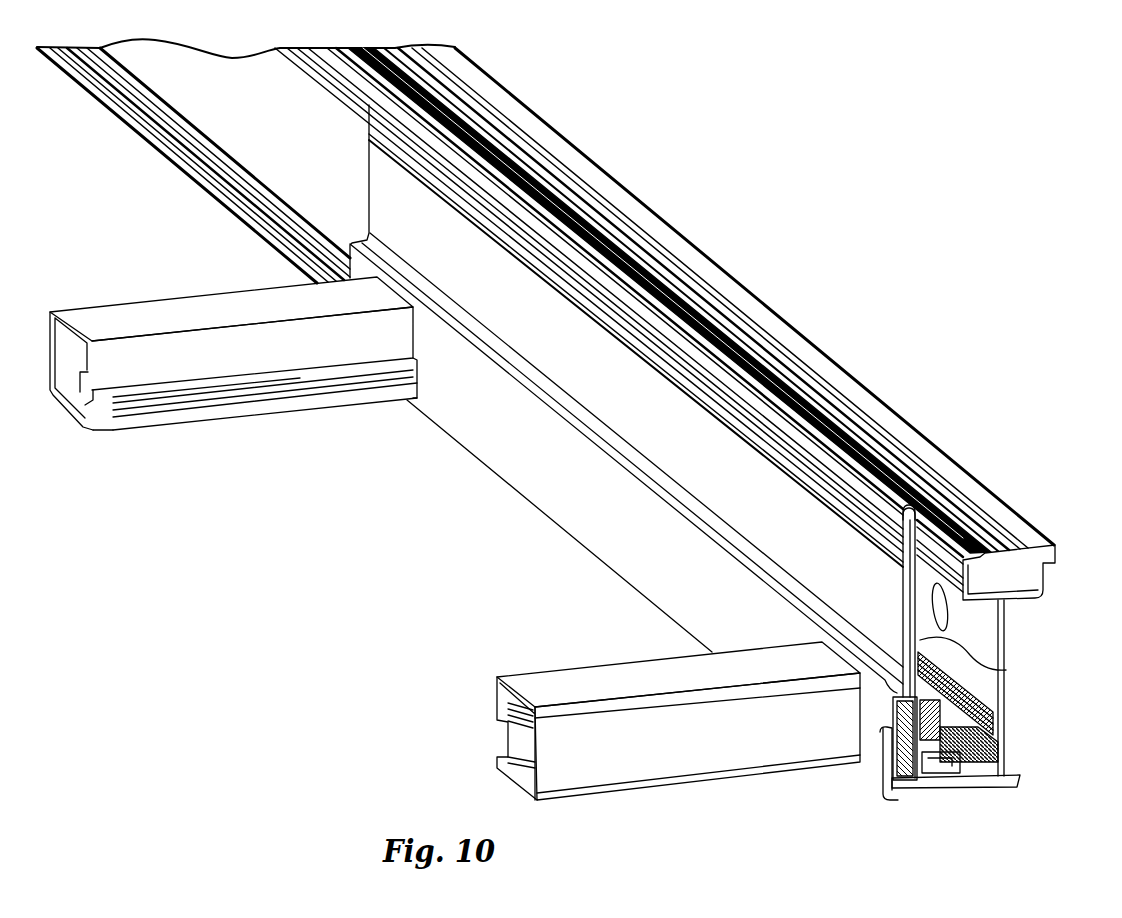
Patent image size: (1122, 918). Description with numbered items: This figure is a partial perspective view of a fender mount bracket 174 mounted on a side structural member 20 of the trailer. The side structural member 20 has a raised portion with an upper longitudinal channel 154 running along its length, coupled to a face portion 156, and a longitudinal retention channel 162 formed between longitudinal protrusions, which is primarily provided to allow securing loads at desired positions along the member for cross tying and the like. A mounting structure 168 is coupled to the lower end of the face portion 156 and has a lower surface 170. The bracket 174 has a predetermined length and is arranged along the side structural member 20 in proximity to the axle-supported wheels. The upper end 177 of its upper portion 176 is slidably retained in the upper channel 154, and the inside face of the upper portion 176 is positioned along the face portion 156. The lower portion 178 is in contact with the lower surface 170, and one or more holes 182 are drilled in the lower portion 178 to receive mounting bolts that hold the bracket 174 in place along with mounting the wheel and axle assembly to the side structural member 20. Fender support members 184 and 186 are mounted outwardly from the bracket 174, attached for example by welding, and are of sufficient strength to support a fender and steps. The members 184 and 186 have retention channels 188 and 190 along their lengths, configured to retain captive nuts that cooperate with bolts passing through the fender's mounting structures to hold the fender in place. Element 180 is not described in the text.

The side structural member 20 is at (651, 197).
The upper longitudinal channel 154 is at (903, 548).
The face portion 156 is at (1005, 670).
The longitudinal retention channel 162 is at (1003, 574).
The mounting structure 168 is at (968, 697).
The lower surface 170 is at (1023, 767).
The fender mount bracket 174 is at (448, 459).
The upper portion 176 is at (722, 493).
The upper end 177 is at (907, 503).
The lower portion 178 is at (972, 772).
The clip 180 is at (873, 745).
The holes 182 is at (943, 768).
The fender support member 184 is at (533, 672).
The fender support member 186 is at (172, 297).
The retention channel 188 is at (493, 733).
The retention channel 190 is at (112, 420).